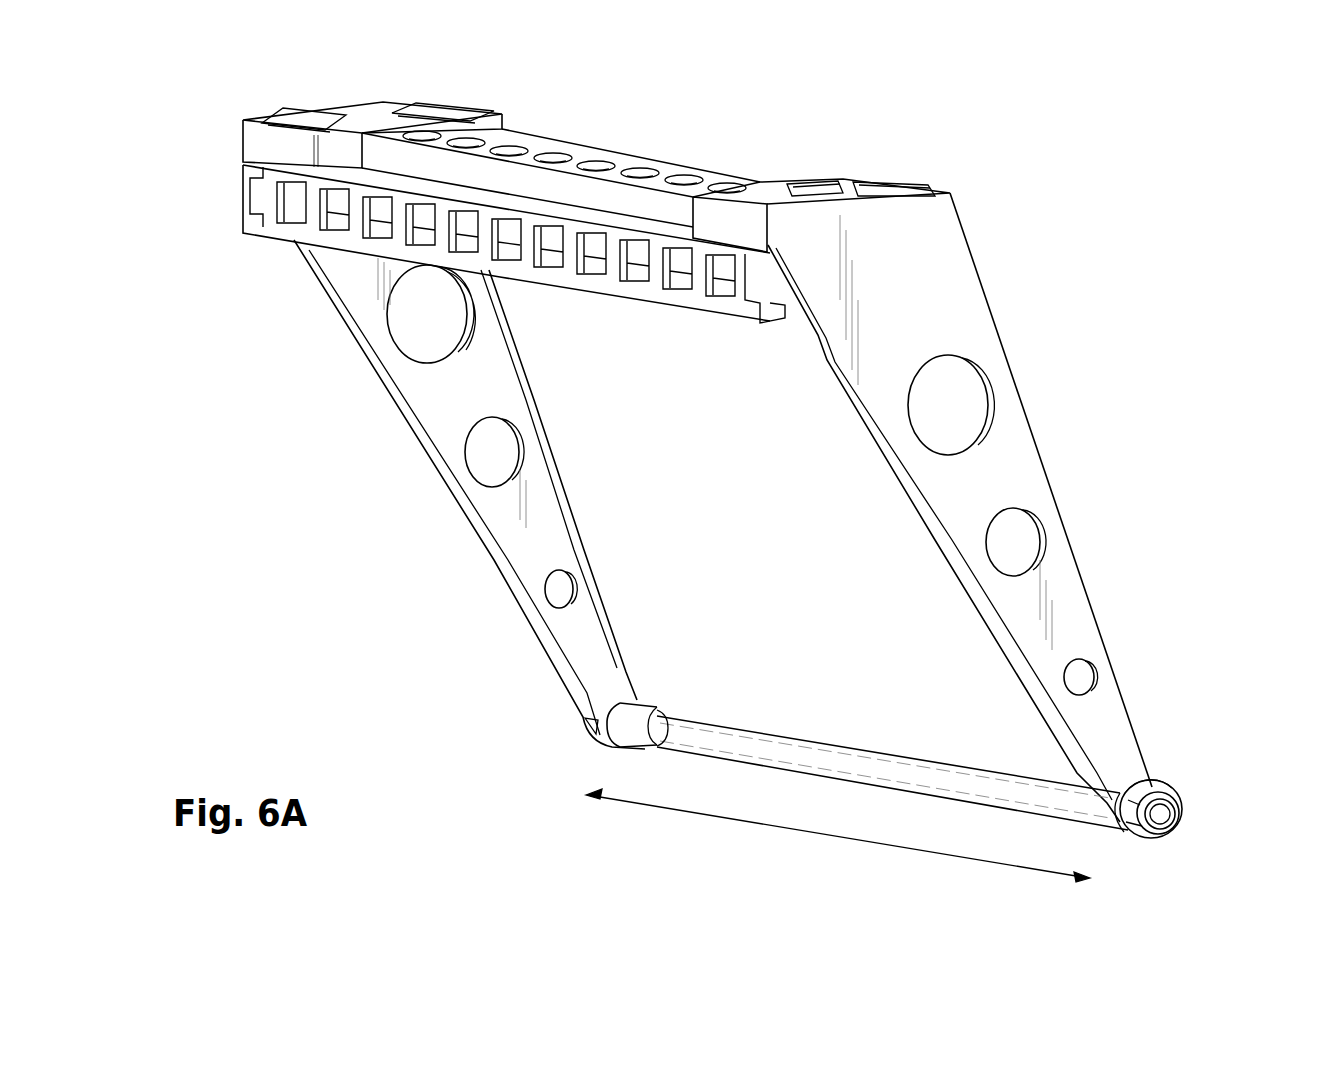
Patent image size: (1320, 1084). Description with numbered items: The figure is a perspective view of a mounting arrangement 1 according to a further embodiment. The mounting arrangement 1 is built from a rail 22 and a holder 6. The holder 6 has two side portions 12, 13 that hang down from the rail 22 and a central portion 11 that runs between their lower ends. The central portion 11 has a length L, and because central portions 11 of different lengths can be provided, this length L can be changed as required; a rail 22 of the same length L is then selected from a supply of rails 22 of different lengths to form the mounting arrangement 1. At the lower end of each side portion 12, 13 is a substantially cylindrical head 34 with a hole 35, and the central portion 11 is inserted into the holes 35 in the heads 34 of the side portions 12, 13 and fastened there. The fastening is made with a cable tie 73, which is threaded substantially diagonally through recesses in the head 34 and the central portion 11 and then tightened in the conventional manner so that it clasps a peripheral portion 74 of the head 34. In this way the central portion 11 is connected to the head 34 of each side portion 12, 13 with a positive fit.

The mounting arrangement 1 is at (221, 146).
The rail 22 is at (583, 157).
The holder 6 is at (477, 544).
The side portion 12 is at (447, 399).
The side portion 13 is at (1007, 462).
The central portion 11 is at (877, 770).
The cable tie 73 is at (1155, 786).
The peripheral portion 74 is at (1162, 792).
The hole 35 is at (1177, 830).
The head 34 is at (1133, 838).
The length L is at (837, 837).